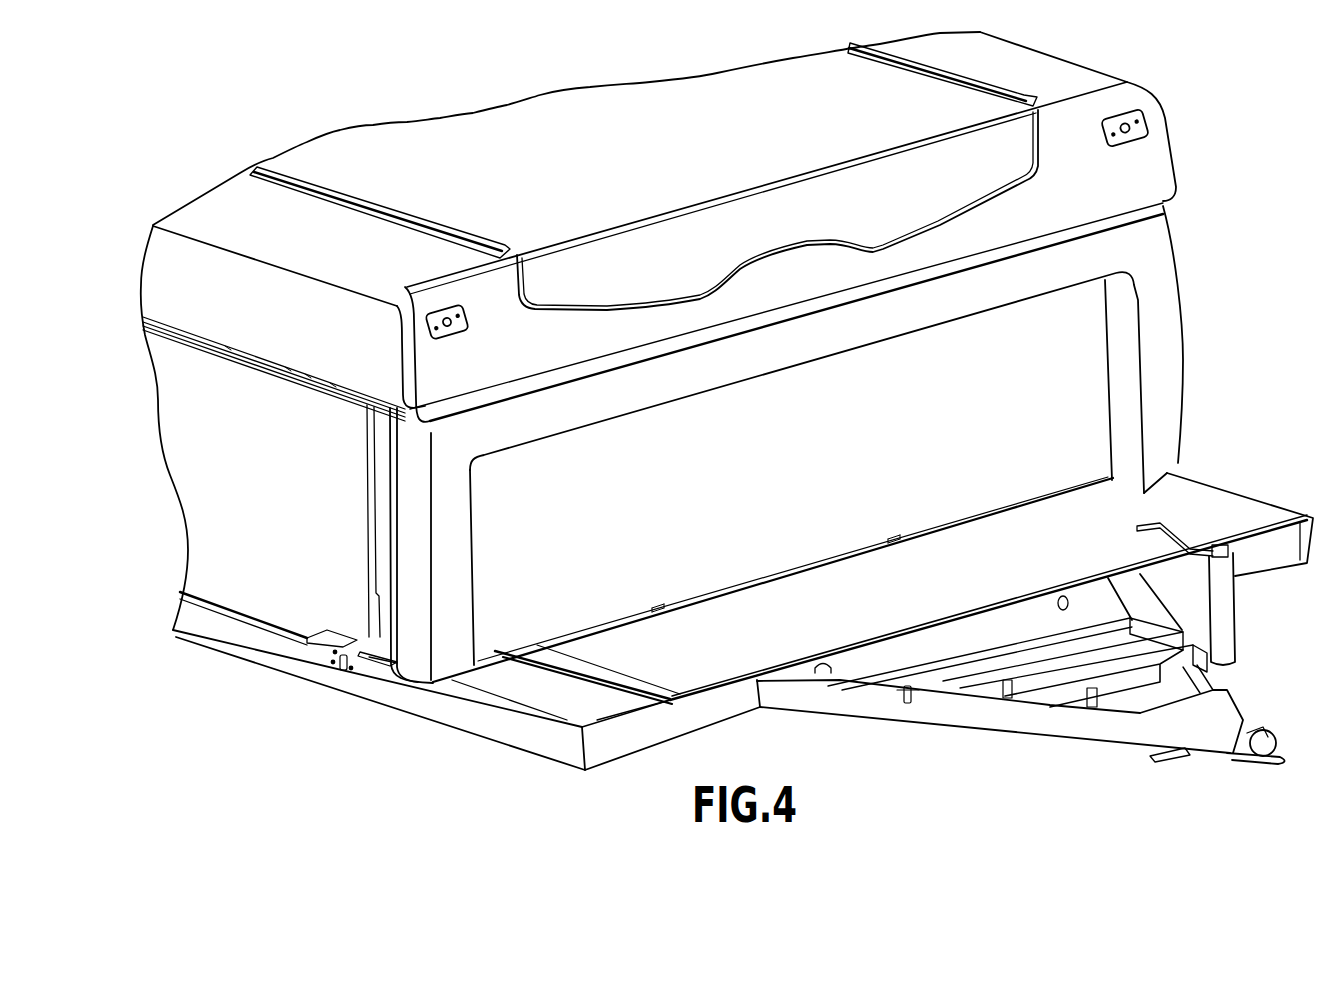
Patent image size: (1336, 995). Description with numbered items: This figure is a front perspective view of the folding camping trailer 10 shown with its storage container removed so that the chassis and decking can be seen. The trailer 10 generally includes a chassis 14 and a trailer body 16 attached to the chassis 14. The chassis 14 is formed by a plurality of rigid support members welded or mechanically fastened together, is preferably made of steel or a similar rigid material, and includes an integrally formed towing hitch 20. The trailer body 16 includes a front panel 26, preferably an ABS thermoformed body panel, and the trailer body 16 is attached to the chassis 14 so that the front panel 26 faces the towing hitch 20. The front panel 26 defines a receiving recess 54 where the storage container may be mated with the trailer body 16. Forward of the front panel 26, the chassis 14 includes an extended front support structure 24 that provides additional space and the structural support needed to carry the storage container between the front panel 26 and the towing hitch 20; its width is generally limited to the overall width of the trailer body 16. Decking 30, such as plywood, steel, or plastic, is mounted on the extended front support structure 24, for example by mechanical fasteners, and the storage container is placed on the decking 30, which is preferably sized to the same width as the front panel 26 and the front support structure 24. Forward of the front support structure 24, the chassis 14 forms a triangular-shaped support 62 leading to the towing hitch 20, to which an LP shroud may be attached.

The folding camping trailer 10 is at (655, 146).
The chassis 14 is at (443, 710).
The trailer body 16 is at (250, 587).
The towing hitch 20 is at (1266, 760).
The extended front support structure 24 is at (1243, 471).
The front panel 26 is at (1157, 310).
The decking 30 is at (1190, 530).
The receiving recess 54 is at (1090, 360).
The triangular-shaped support 62 is at (928, 733).